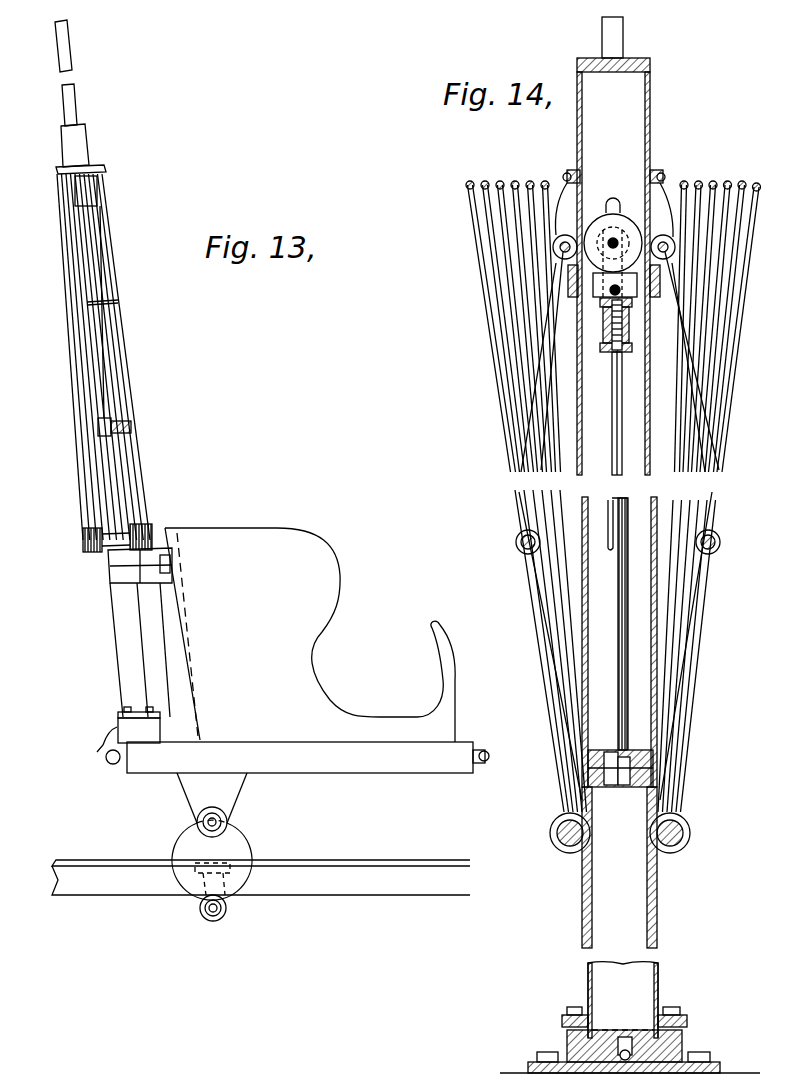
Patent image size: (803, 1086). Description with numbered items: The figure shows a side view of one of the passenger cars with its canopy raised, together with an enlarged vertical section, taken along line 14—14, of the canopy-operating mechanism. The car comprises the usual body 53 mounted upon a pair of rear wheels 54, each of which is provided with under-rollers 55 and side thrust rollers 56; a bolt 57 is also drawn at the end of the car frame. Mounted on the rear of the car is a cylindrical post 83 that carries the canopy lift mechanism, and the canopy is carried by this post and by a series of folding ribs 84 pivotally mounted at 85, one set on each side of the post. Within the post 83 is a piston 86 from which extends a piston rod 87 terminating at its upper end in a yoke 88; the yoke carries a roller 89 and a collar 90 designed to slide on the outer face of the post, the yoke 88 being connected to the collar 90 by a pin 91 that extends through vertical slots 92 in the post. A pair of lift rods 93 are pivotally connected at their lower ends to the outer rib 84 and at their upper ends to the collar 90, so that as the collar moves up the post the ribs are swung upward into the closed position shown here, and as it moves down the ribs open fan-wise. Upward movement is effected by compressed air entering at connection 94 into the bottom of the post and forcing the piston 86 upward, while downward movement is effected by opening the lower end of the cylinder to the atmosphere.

In FIG. 13, the section line 14 is at (72, 78).
In FIG. 13, the body 53 is at (315, 580).
In FIG. 13, the rear wheels 54 is at (243, 829).
In FIG. 13, the under-rollers 55 is at (212, 922).
In FIG. 13, the side thrust rollers 56 is at (230, 873).
In FIG. 13, the bolt 57 is at (488, 753).
In FIG. 14, the bolt 57 is at (488, 753).
In FIG. 13, the cylindrical post 83 is at (115, 485).
In FIG. 14, the cylindrical post 83 is at (657, 680).
In FIG. 13, the folding ribs 84 is at (130, 364).
In FIG. 14, the folding ribs 84 is at (495, 339).
In FIG. 14, the pivot 85 is at (553, 822).
In FIG. 14, the piston 86 is at (653, 759).
In FIG. 14, the piston rod 87 is at (623, 655).
In FIG. 14, the yoke 88 is at (605, 323).
In FIG. 14, the roller 89 is at (598, 240).
In FIG. 14, the collar 90 is at (573, 278).
In FIG. 14, the pin 91 is at (620, 273).
In FIG. 14, the vertical slots 92 is at (613, 402).
In FIG. 14, the lift rods 93 is at (543, 430).
In FIG. 13, the air connection 94 is at (110, 740).